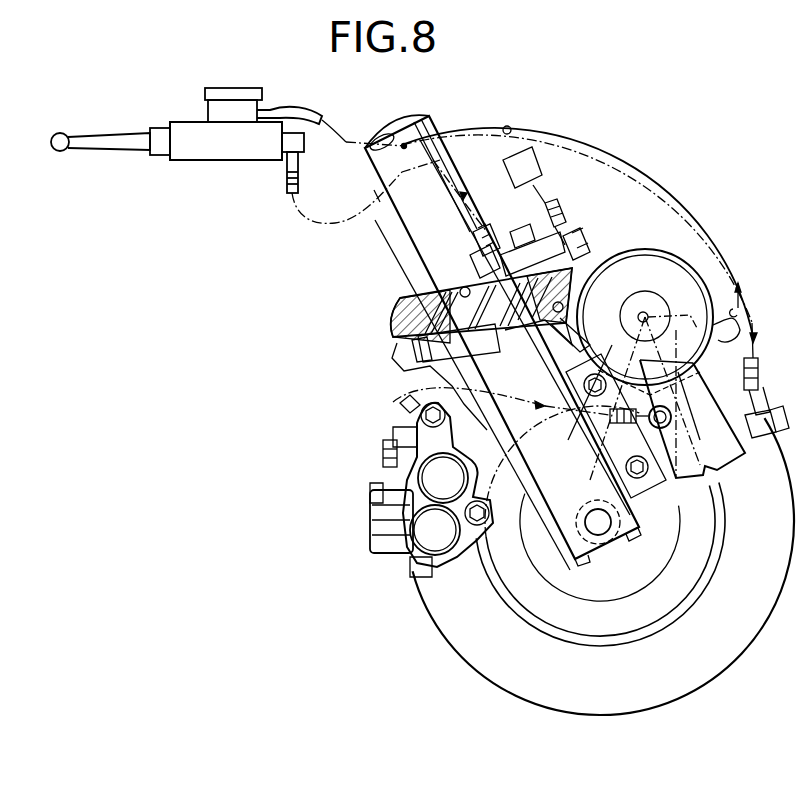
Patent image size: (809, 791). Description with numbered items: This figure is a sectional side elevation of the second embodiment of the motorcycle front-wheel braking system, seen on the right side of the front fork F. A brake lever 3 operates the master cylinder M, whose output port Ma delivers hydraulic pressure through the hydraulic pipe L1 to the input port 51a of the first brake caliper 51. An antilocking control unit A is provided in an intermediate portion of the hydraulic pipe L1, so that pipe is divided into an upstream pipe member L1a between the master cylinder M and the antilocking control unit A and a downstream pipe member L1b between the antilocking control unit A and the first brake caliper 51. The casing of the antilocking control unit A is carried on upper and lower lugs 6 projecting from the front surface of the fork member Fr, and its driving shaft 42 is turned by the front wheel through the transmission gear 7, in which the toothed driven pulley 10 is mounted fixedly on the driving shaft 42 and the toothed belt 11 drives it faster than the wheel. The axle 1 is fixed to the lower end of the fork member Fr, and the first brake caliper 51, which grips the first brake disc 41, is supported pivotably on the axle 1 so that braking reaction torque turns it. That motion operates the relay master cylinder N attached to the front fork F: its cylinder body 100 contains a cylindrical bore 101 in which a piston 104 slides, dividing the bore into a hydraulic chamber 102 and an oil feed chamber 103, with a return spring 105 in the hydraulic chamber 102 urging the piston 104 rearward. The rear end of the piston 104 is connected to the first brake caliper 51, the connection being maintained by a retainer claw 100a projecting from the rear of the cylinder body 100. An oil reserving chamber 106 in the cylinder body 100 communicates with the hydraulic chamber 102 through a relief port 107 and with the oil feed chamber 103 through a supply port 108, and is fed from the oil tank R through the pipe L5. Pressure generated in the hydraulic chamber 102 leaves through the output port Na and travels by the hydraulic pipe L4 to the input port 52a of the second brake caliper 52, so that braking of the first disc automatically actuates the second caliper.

The brake lever 3 is at (122, 144).
The master cylinder M is at (201, 152).
The oil tank R is at (231, 106).
The output port Ma is at (290, 150).
The hydraulic pipe L1 is at (333, 226).
The upstream pipe member L1a is at (722, 204).
The downstream pipe member L1b is at (501, 414).
The hydraulic pipe L4 is at (546, 212).
The pipe L5 is at (455, 184).
The front fork F is at (440, 120).
The right fork member Fr is at (430, 232).
The relay master cylinder N is at (424, 290).
The output port Na is at (582, 245).
The cylinder body 100 is at (405, 313).
The retainer claw 100a is at (406, 372).
The cylindrical bore 101 is at (505, 340).
The hydraulic chamber 102 is at (560, 302).
The oil feed chamber 103 is at (569, 340).
The piston 104 is at (538, 341).
The return spring 105 is at (562, 320).
The oil reserving chamber 106 is at (474, 244).
The relief port 107 is at (532, 243).
The supply port 108 is at (478, 262).
The second brake caliper 52 is at (503, 165).
The input port 52a is at (540, 190).
The transmission gear 7 is at (651, 307).
The driving shaft 42 is at (680, 312).
The toothed driven pulley 10 is at (632, 340).
The toothed belt 11 is at (668, 442).
The lug 6 is at (603, 418).
The axle 1 is at (598, 536).
The first brake disc 41 is at (460, 640).
The antilocking control unit A is at (730, 470).
The first brake caliper 51 is at (395, 552).
The input port 51a is at (380, 470).